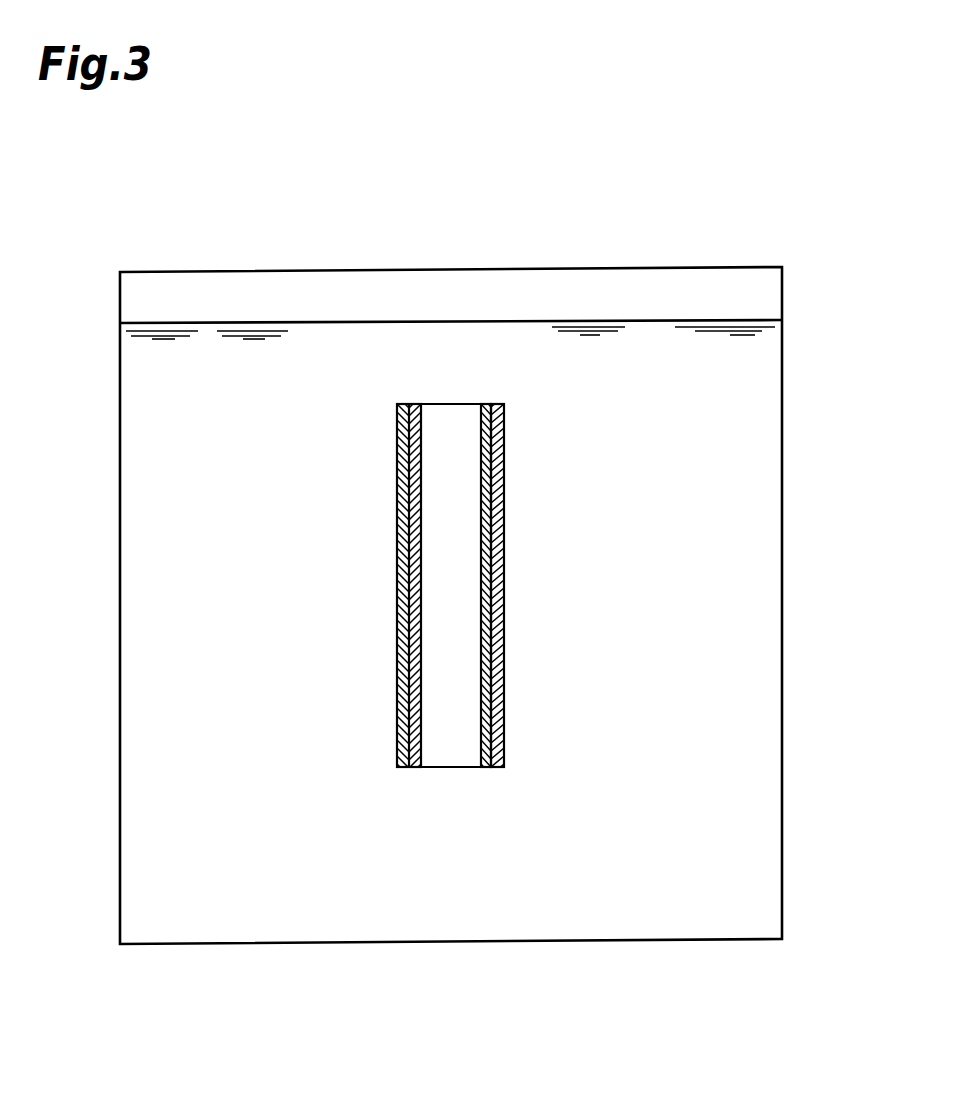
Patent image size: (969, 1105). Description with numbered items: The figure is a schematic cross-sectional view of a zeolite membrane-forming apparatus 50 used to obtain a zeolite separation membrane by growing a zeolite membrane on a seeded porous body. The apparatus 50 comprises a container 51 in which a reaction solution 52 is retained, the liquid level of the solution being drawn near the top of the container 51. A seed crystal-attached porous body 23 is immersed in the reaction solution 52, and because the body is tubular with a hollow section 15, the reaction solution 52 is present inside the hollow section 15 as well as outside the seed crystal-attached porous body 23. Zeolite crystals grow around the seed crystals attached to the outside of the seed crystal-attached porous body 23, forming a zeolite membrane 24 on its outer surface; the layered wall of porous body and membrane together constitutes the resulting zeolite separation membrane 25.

The zeolite membrane-forming apparatus 50 is at (756, 166).
The container 51 is at (783, 536).
The reaction solution 52 is at (768, 450).
The hollow section 15 is at (435, 588).
The seed crystal-attached porous body 23 is at (488, 768).
The zeolite membrane 24 is at (499, 768).
The zeolite separation membrane 25 is at (537, 823).